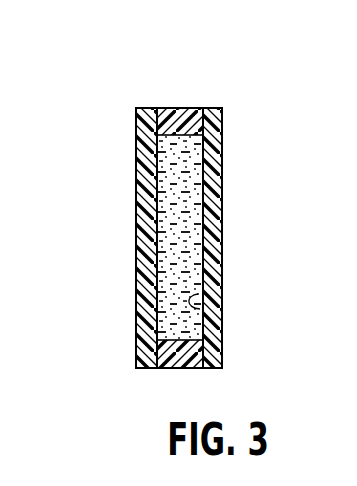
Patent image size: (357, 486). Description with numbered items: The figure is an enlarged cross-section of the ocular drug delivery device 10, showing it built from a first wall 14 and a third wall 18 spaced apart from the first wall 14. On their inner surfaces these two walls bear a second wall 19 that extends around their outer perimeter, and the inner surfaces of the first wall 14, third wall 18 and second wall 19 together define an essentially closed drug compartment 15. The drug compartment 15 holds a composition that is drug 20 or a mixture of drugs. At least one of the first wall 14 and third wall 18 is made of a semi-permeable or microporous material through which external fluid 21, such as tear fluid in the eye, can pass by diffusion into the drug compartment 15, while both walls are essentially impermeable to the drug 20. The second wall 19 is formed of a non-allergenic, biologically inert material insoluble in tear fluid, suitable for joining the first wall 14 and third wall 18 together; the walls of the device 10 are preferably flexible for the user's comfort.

The ocular drug delivery device 10 is at (100, 250).
The first wall 14 is at (210, 260).
The drug compartment 15 is at (200, 309).
The third wall 18 is at (136, 300).
The second wall 19 is at (170, 114).
The drug 20 is at (140, 180).
The external fluid 21 is at (202, 194).